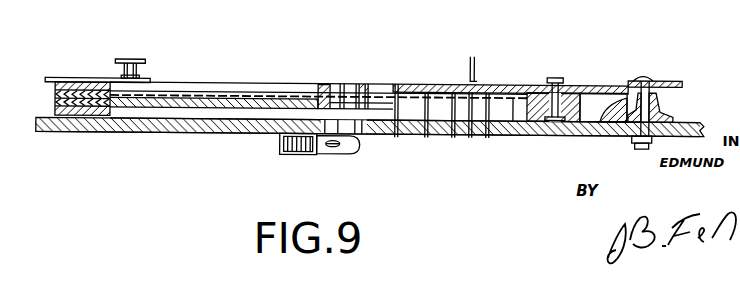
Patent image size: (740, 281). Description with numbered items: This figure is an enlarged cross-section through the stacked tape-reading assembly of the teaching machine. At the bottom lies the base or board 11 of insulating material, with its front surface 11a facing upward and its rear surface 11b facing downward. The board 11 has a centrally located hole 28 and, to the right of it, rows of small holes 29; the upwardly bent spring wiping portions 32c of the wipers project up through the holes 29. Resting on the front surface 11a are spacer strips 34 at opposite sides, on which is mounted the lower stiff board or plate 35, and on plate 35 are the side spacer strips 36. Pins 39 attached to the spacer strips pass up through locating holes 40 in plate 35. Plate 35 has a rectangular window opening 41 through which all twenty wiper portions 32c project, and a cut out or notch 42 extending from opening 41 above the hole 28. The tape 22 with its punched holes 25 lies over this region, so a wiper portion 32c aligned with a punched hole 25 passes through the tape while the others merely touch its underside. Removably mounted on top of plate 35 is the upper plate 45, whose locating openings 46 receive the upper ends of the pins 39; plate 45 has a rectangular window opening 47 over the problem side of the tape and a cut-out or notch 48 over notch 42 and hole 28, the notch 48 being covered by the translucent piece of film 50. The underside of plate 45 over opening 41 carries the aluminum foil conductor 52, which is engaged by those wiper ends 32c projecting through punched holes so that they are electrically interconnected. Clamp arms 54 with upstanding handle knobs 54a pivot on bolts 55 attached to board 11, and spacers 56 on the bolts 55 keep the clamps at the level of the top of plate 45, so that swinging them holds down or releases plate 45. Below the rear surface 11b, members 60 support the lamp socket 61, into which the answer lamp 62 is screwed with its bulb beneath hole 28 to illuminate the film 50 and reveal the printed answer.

The base or board 11 is at (125, 134).
The front surface 11a is at (257, 120).
The rear surface 11b is at (236, 133).
The tape 22 is at (188, 98).
The punched holes 25 is at (423, 98).
The hole 28 is at (357, 134).
The small holes 29 is at (489, 137).
The spring wiping portion 32c is at (452, 134).
The spacer strips 34 is at (55, 110).
The lower stiff board or plate 35 is at (152, 109).
The side spacer strips 36 is at (582, 98).
The pins 39 is at (555, 76).
The locating holes 40 is at (570, 91).
The rectangular window opening 41 is at (470, 137).
The cut out or notch 42 is at (345, 98).
The upper plate 45 is at (395, 92).
The locating openings 46 is at (542, 87).
The rectangular window opening 47 is at (237, 84).
The cut-out or notch 48 is at (348, 83).
The piece of film 50 is at (332, 92).
The aluminum foil sheet or conductor 52 is at (448, 91).
The clamp arms 54 is at (95, 79).
The handle knobs 54a is at (128, 60).
The pivot bolts or pins 55 is at (668, 96).
The spacers 56 is at (670, 112).
The members 60 is at (289, 155).
The lamp socket 61 is at (302, 158).
The lamp 62 is at (348, 162).